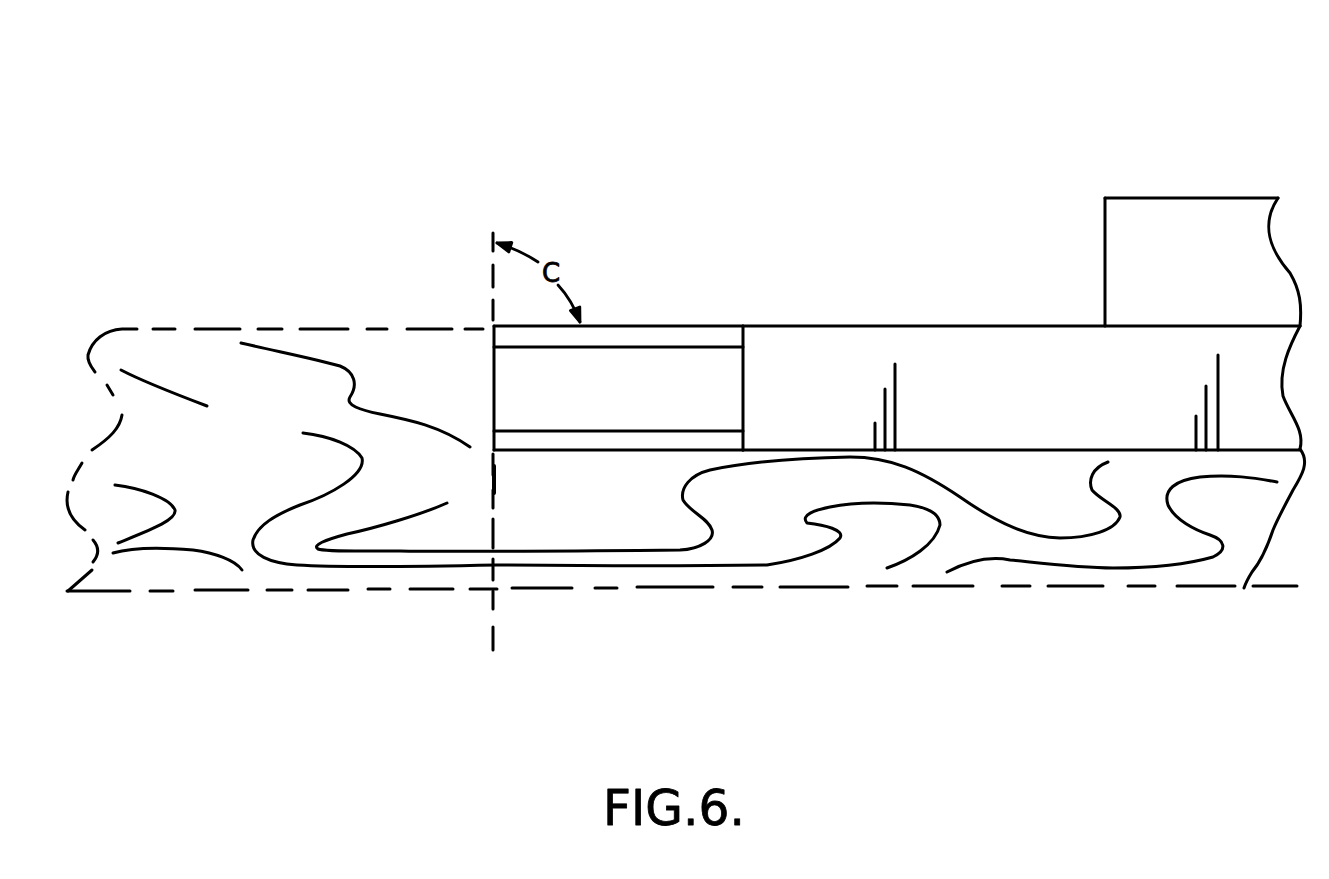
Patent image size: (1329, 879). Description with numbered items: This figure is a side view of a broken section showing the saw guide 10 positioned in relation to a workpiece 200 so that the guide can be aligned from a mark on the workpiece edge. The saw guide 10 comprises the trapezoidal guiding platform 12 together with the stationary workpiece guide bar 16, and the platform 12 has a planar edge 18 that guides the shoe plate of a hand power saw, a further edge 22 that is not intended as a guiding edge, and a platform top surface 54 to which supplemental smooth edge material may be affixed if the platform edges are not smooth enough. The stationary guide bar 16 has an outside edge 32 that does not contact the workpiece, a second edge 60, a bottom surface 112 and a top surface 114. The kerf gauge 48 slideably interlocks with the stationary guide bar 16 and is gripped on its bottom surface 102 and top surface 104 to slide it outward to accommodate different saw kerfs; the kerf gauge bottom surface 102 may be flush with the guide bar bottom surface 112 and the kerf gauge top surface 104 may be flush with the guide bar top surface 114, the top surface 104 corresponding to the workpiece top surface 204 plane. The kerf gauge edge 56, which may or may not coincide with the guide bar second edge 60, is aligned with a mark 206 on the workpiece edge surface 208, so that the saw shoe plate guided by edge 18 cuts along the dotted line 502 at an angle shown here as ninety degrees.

The saw guide 10 is at (760, 112).
The guiding platform 12 is at (1151, 177).
The stationary workpiece guide bar 16 is at (1134, 411).
The planar edge 18 is at (1105, 270).
The planar edge 22 is at (1151, 220).
The outside edge of stationary guide bar 32 is at (1022, 380).
The kerf gauge 48 is at (577, 345).
The platform top surface 54 is at (1148, 198).
The kerf gauge edge 56 is at (494, 391).
The stationary guide bar second edge 60 is at (745, 385).
The kerf gauge bottom surface 102 is at (622, 452).
The kerf gauge top surface 104 is at (712, 326).
The stationary guide bar bottom surface 112 is at (1035, 450).
The guide bar top surface 114 is at (882, 326).
The workpiece 200 is at (686, 428).
The workpiece top surface 204 is at (122, 328).
The mark 206 is at (490, 481).
The workpiece edge surface 208 is at (207, 450).
The dotted line 502 is at (493, 200).